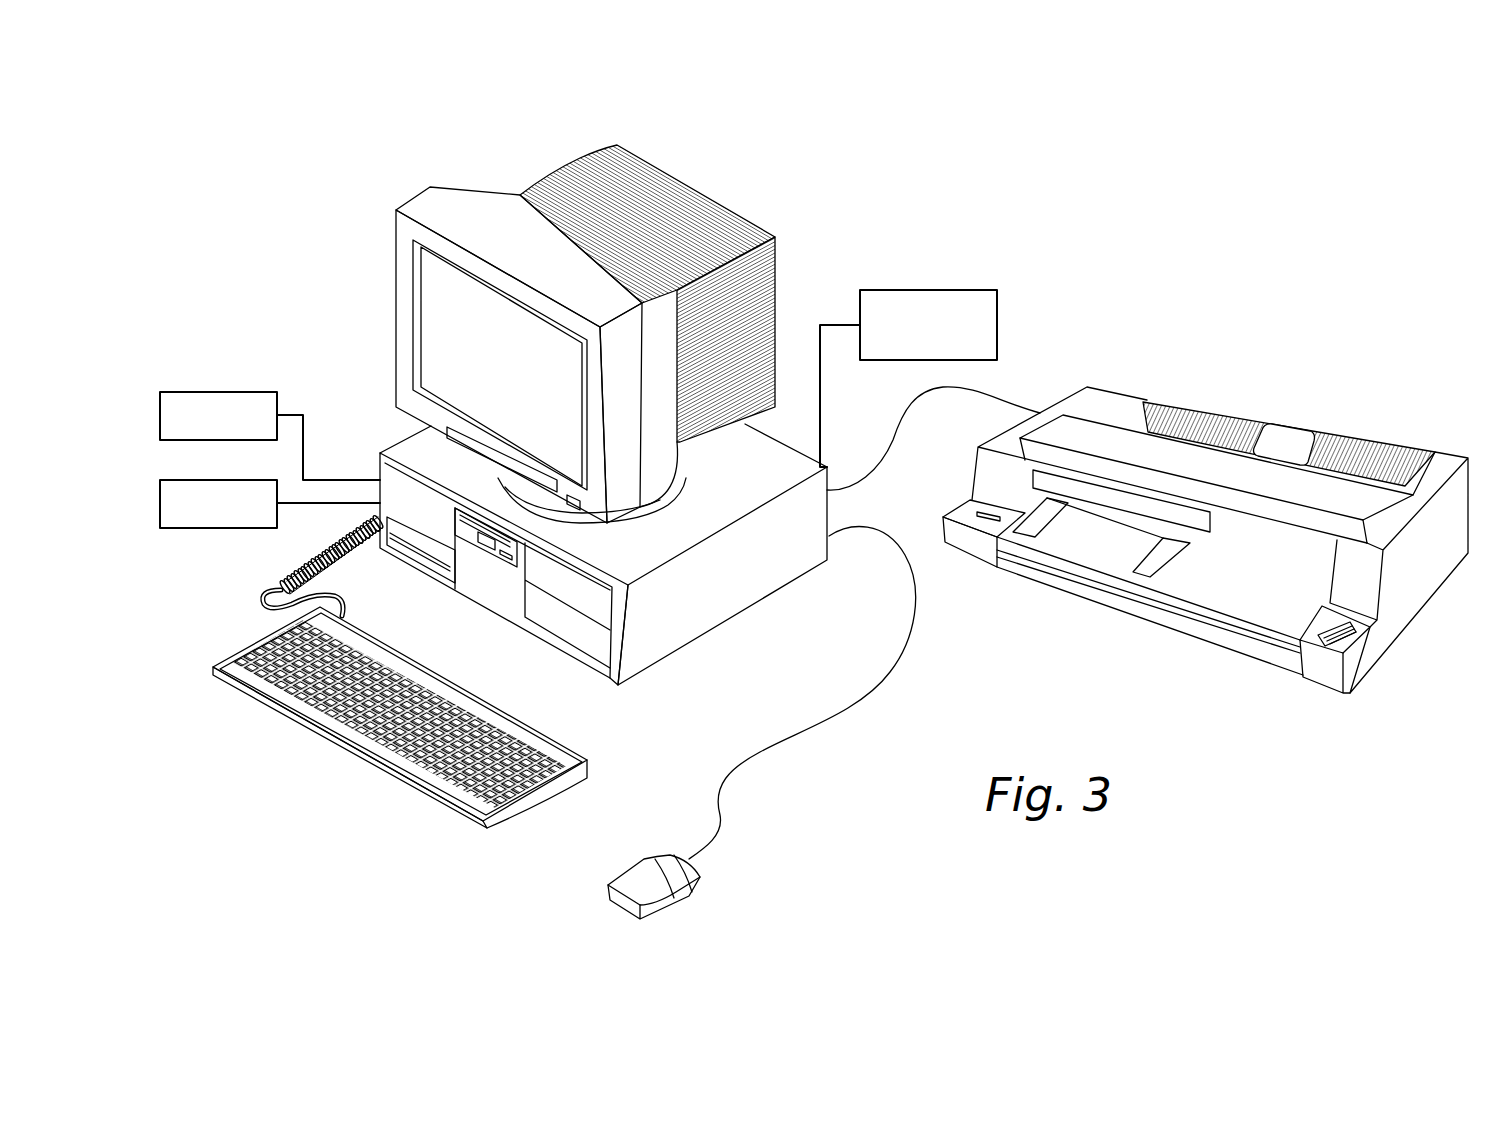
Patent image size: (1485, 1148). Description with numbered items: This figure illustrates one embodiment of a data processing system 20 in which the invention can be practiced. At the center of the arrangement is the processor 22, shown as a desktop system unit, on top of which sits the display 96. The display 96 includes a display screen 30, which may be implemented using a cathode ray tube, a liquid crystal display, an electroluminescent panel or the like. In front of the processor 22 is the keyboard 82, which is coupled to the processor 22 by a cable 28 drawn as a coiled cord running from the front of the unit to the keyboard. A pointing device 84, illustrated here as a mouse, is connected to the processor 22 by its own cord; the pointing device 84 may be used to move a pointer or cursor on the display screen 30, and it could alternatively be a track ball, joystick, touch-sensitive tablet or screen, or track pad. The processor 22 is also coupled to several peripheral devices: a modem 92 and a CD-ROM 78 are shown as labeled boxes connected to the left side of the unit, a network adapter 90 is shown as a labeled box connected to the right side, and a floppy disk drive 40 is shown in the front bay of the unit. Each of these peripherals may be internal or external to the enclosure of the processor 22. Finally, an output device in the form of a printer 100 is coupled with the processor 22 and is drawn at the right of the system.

The data processing system 20 is at (986, 187).
The processor 22 is at (603, 573).
The cable 28 is at (290, 561).
The display screen 30 is at (519, 377).
The floppy disk drive 40 is at (485, 546).
The CD-ROM 78 is at (210, 480).
The keyboard 82 is at (364, 779).
The pointing device 84 is at (689, 892).
The network adapter 90 is at (1000, 303).
The modem 92 is at (210, 392).
The display 96 is at (375, 288).
The printer 100 is at (1150, 370).